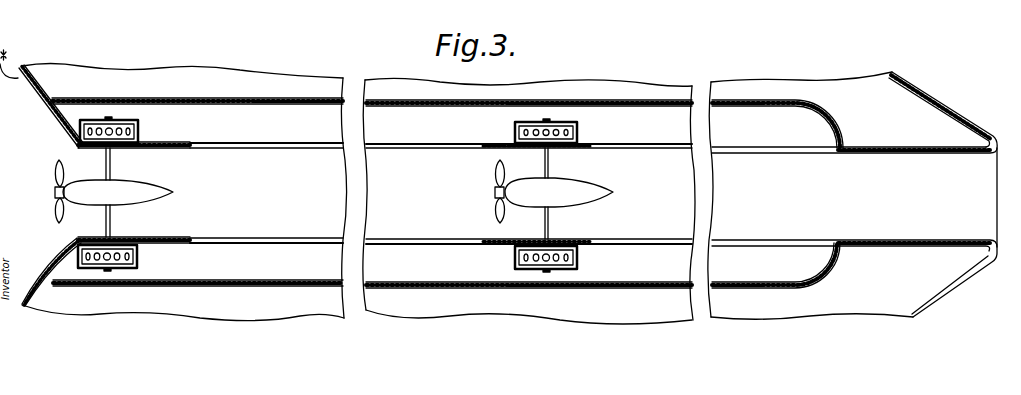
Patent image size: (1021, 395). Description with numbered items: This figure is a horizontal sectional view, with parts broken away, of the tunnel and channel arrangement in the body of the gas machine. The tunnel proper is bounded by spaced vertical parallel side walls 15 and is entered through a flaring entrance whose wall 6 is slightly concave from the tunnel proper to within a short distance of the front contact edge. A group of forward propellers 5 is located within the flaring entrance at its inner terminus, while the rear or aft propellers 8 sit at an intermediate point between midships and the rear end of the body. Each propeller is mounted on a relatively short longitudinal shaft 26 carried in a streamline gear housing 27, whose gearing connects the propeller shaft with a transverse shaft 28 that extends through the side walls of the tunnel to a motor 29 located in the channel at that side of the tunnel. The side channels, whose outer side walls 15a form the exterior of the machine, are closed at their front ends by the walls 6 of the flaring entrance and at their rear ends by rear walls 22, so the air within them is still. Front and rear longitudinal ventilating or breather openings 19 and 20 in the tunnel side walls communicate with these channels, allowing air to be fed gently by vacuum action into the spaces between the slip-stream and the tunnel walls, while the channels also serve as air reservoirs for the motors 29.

The forward propellers 5 is at (55, 204).
The wall of the flaring entrance 6 is at (62, 114).
The rear or aft propellers 8 is at (494, 179).
The side walls of the tunnel 15 is at (173, 146).
The outer side walls of the channels 15a is at (314, 99).
The front ventilating openings 19 is at (200, 238).
The rear ventilating openings 20 is at (592, 239).
The rear walls 22 is at (841, 129).
The longitudinal shafts 26 is at (55, 186).
The streamline gear housings 27 is at (122, 200).
The transverse shafts 28 is at (111, 166).
The motors 29 is at (136, 120).